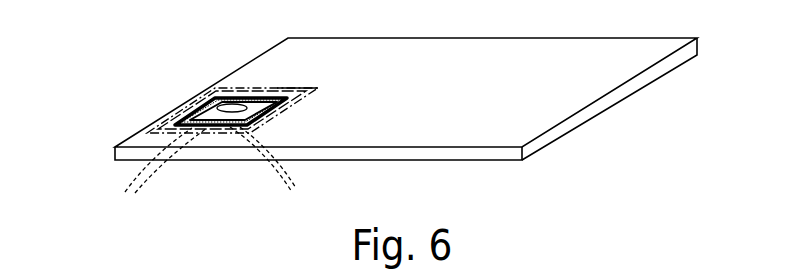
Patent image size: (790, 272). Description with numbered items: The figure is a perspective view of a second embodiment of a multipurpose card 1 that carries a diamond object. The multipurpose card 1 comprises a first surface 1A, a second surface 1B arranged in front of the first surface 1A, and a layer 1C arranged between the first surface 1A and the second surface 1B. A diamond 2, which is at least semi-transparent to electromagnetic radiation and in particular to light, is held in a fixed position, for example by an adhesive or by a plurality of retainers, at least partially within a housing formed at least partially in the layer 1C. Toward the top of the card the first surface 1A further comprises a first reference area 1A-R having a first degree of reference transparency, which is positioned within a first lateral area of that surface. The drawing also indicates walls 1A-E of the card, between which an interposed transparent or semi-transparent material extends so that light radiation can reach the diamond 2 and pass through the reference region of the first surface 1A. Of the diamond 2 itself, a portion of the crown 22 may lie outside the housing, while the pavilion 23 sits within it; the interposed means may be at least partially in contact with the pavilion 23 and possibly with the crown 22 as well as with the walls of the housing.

The multipurpose card 1 is at (373, 94).
The first surface 1A is at (645, 53).
The second surface 1B is at (557, 143).
The layer 1C is at (632, 90).
The first reference area 1A-R is at (280, 92).
The walls 1A-E is at (268, 115).
The diamond 2 is at (195, 114).
The crown 22 is at (159, 179).
The pavilion 23 is at (277, 171).